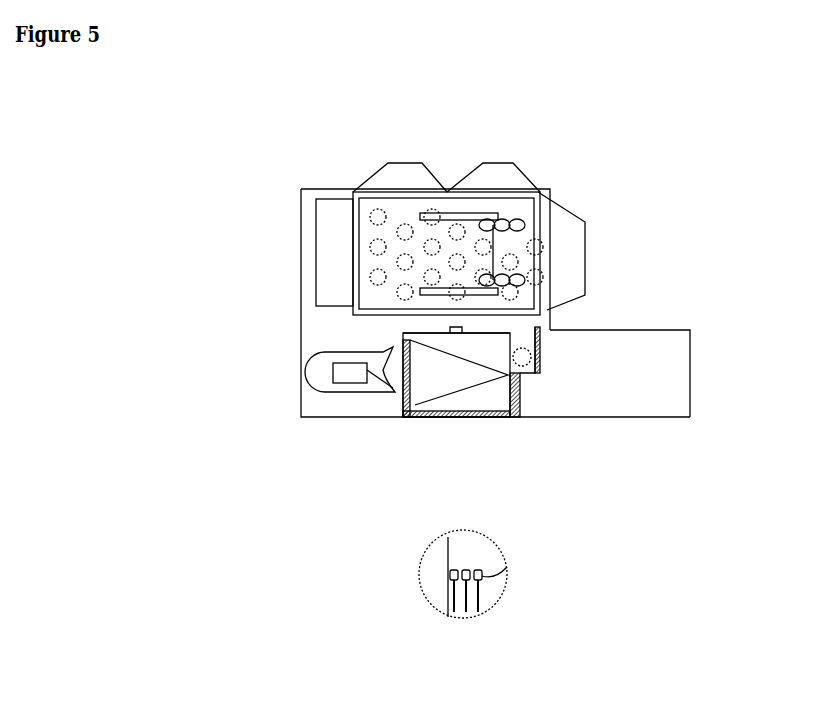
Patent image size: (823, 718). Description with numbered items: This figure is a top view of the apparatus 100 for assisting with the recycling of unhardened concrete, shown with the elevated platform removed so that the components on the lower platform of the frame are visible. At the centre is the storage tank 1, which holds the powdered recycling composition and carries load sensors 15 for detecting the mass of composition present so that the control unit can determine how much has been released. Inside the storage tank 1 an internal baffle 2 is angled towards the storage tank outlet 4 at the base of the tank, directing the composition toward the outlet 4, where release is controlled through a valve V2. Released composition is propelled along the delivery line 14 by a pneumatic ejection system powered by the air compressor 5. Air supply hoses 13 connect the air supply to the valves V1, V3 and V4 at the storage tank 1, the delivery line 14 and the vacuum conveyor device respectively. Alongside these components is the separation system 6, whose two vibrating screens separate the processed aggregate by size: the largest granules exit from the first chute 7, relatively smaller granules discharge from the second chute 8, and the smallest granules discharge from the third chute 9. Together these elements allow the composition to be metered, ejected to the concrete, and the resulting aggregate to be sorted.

The apparatus 100 is at (238, 178).
The load sensors 15 is at (450, 329).
The separation system 6 is at (352, 190).
The second chute 8 is at (447, 190).
The third chute 9 is at (522, 177).
The first chute 7 is at (580, 245).
The air compressor 5 is at (328, 372).
The storage tank 1 is at (437, 375).
The internal baffle 2 is at (467, 363).
The valve V1 is at (400, 343).
The storage tank outlet 4 is at (505, 387).
The delivery line 14 is at (528, 383).
The air supply hoses 13 is at (530, 416).
The valve V2 is at (443, 567).
The valve V3 is at (462, 571).
The valve V4 is at (490, 560).